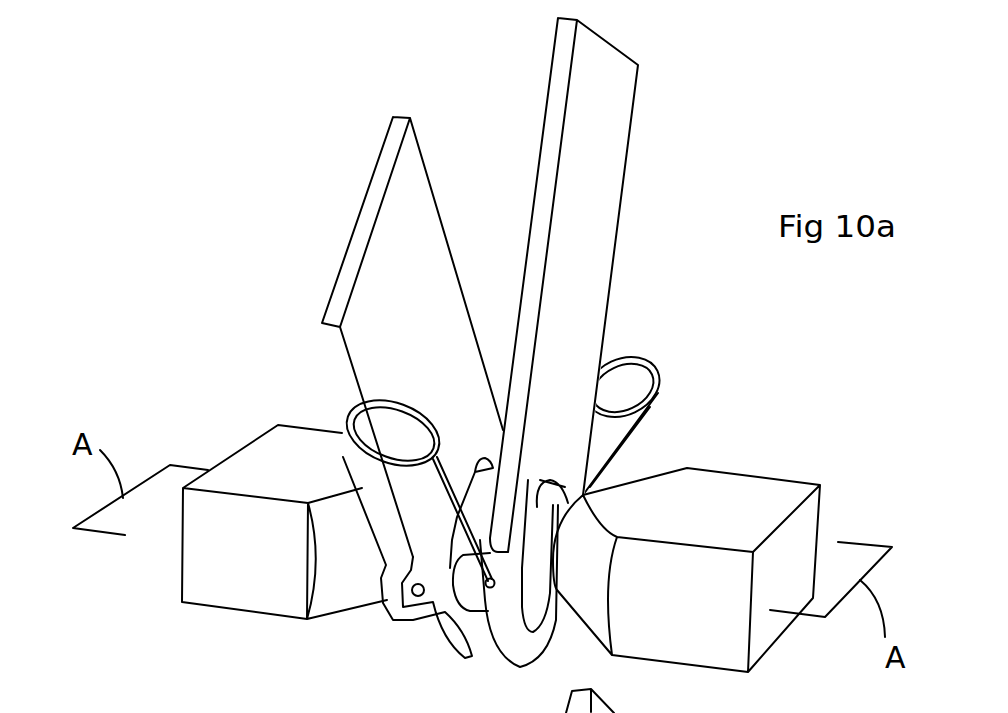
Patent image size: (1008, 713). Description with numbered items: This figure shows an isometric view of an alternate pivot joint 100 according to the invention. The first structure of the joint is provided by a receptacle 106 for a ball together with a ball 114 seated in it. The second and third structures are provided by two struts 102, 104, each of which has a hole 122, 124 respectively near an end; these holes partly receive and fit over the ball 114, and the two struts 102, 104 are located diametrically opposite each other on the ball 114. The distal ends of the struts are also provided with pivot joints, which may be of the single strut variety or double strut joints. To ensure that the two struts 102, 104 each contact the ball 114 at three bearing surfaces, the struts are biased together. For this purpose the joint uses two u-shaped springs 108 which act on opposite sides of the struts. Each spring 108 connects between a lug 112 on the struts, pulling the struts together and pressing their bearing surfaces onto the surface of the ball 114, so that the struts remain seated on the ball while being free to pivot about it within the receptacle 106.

The pivot joint 100 is at (160, 170).
The strut 102 is at (372, 173).
The strut 104 is at (617, 143).
The receptacle 106 is at (262, 455).
The u-shaped spring 108 is at (345, 413).
The lug 112 is at (393, 605).
The ball 114 is at (550, 500).
The hole 122 is at (489, 458).
The hole 124 is at (543, 622).